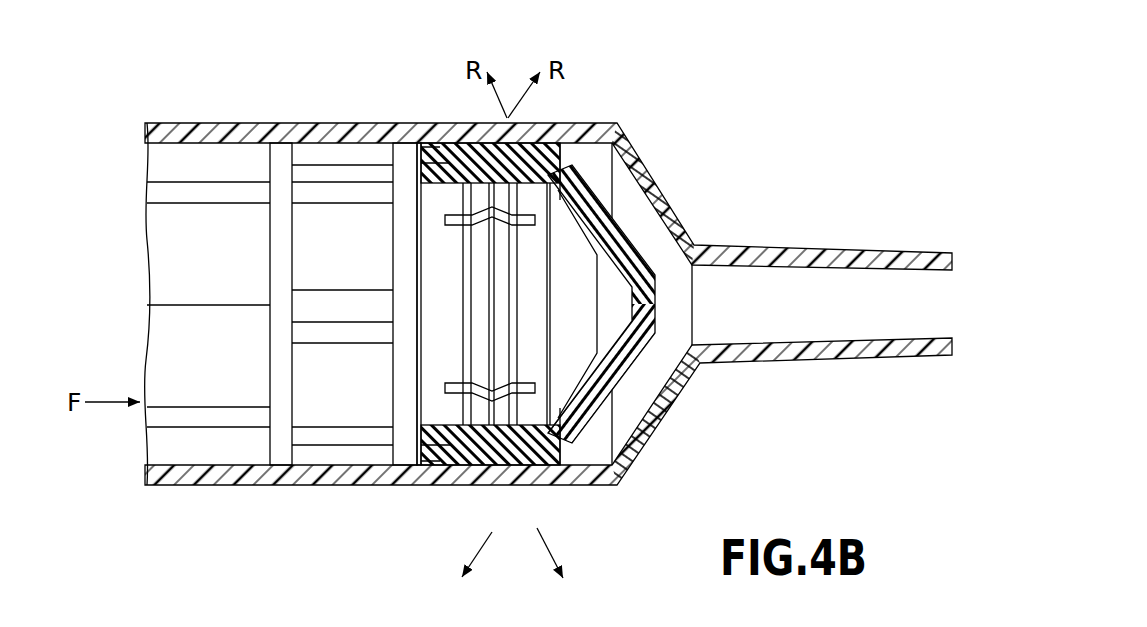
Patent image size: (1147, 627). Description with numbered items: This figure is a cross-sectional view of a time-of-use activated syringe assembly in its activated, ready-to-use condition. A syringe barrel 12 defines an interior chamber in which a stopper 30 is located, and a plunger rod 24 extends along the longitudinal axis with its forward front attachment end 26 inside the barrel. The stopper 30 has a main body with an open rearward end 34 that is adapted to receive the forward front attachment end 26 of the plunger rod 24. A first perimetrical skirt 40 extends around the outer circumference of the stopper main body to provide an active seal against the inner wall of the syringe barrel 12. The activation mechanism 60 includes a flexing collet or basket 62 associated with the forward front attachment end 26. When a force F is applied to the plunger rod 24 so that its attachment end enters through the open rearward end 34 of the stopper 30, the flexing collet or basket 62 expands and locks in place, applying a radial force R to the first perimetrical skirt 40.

The syringe barrel 12 is at (228, 123).
The plunger rod 24 is at (170, 253).
The forward front attachment end 26 is at (573, 255).
The stopper 30 is at (617, 380).
The open rearward end 34 is at (437, 147).
The first perimetrical skirt 40 is at (547, 147).
The activation mechanism 60 is at (527, 493).
The flexing collet or basket 62 is at (500, 333).